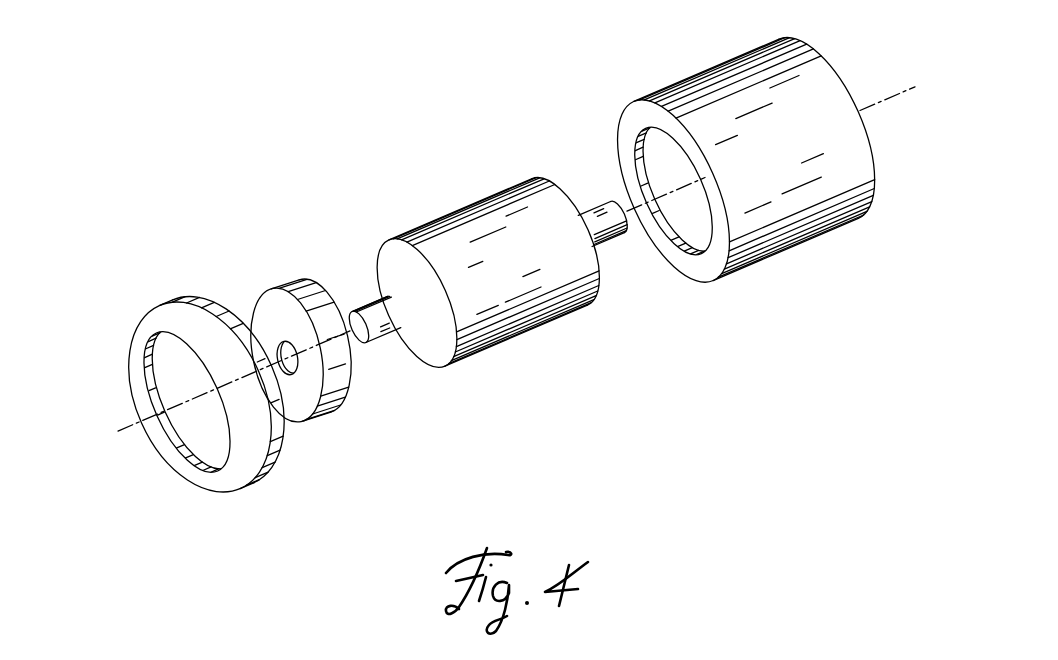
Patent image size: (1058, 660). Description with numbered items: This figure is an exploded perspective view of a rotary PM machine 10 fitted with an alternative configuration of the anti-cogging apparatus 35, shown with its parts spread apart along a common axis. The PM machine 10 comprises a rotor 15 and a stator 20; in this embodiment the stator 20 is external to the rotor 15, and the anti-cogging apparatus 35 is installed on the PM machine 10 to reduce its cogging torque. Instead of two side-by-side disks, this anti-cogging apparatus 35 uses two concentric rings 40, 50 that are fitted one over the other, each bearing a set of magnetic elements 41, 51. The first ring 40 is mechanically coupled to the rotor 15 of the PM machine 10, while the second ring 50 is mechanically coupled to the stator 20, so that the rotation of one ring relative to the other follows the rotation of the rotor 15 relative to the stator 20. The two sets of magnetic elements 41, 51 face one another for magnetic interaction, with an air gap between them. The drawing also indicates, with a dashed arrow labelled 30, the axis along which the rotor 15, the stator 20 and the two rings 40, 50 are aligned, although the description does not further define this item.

The rotary PM machine 10 is at (868, 225).
The rotor 15 is at (495, 215).
The stator 20 is at (737, 78).
The axis of rotation 30 is at (140, 440).
The anti-cogging apparatus 35 is at (378, 432).
The first ring 40 is at (267, 327).
The first set of magnetic elements 41 is at (293, 293).
The second ring 50 is at (181, 300).
The second set of magnetic elements 51 is at (140, 391).